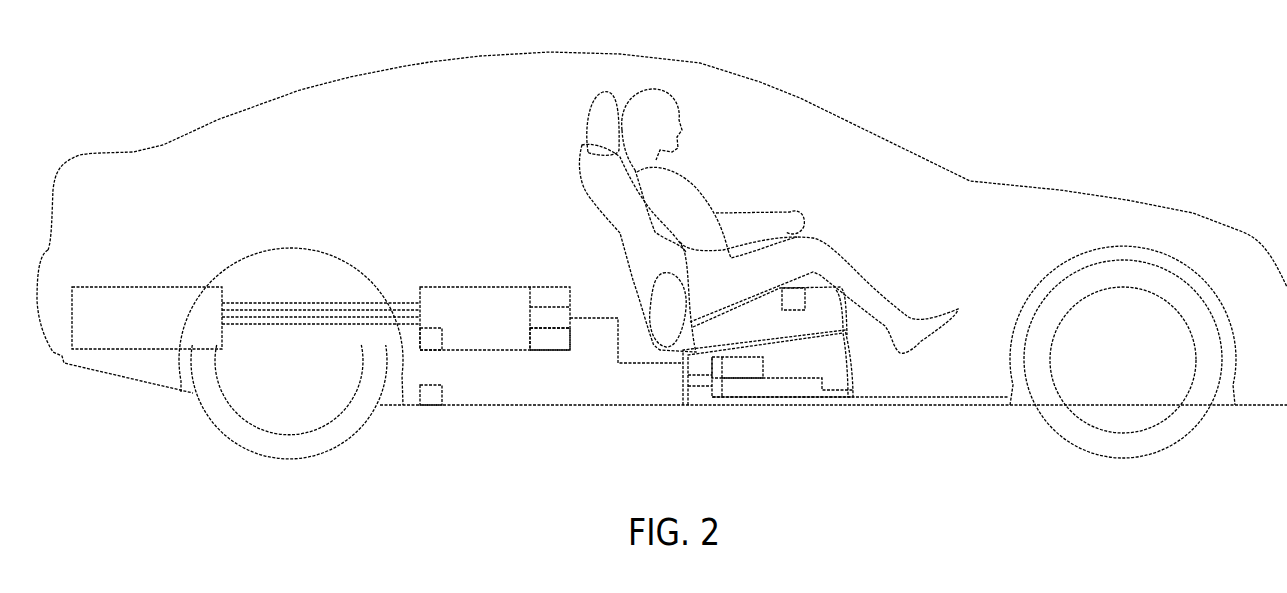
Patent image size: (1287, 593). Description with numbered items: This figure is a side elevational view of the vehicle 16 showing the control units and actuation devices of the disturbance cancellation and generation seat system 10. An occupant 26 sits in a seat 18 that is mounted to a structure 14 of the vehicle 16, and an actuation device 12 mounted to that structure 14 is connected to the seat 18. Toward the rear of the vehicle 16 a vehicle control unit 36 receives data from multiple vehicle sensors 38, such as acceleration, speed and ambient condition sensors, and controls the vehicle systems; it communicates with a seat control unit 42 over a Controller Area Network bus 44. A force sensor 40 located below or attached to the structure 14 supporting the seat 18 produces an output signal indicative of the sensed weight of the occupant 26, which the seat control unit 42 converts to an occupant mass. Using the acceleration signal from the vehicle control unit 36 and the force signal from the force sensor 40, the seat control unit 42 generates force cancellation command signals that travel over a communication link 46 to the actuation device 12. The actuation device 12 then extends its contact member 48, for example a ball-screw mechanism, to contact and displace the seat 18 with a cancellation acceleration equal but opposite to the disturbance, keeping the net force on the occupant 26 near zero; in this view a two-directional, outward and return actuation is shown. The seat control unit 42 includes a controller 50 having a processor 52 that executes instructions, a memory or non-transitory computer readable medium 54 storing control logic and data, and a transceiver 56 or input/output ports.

The disturbance cancellation and generation seat system 10 is at (984, 113).
The actuation device 12 is at (765, 366).
The structure 14 is at (683, 393).
The vehicle 16 is at (725, 70).
The seat 18 is at (582, 158).
The occupant 26 is at (702, 195).
The vehicle control unit 36 is at (115, 297).
The vehicle sensors 38 is at (440, 396).
The force sensor 40 is at (782, 300).
The seat control unit 42 is at (456, 298).
The Controller Area Network (CAN) bus 44 is at (273, 302).
The communication link 46 is at (617, 342).
The contact member 48 is at (852, 388).
The controller 50 is at (549, 298).
The processor 52 is at (542, 312).
The memory or non-transitory computer readable medium 54 is at (549, 340).
The transceiver 56 is at (440, 340).